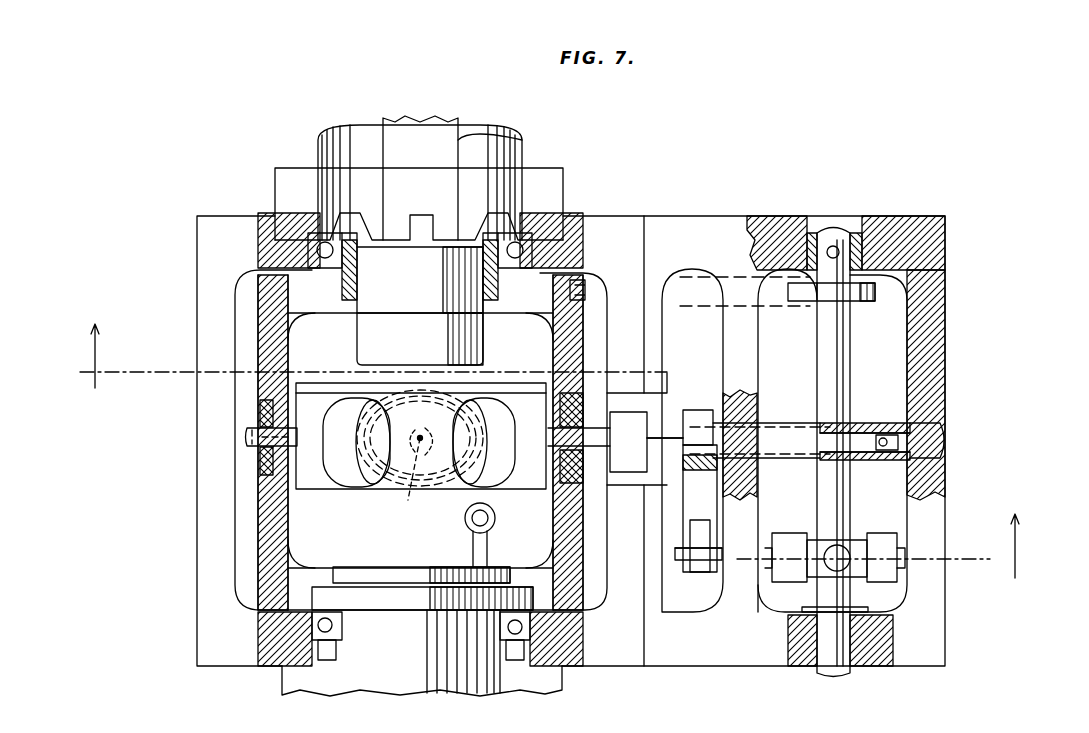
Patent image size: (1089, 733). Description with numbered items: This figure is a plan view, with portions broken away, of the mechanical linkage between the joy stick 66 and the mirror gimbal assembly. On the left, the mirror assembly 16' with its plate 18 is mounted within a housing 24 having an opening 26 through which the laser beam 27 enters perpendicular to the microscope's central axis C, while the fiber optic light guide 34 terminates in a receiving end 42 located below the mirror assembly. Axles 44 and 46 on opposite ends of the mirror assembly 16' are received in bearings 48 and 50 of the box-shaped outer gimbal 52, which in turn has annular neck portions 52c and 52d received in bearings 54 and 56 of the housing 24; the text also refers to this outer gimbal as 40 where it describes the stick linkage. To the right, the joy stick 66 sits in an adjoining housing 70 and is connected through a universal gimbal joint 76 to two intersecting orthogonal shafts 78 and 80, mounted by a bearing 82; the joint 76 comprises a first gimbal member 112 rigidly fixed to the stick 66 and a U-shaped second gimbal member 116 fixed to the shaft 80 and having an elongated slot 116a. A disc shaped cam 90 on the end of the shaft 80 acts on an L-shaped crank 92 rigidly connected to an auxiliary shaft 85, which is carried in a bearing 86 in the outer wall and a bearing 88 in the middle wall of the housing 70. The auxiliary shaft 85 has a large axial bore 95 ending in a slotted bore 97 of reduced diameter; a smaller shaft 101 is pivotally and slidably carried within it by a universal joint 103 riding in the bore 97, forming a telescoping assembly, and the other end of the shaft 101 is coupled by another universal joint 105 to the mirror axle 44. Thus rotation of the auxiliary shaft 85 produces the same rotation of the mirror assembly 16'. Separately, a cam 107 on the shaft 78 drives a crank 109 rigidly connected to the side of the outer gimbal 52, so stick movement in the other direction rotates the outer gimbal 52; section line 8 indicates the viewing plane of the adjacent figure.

The section line 8 is at (550, 449).
The mirror assembly 16' is at (343, 512).
The plate 18 is at (520, 395).
The housing 24 is at (216, 232).
The opening 26 is at (500, 128).
The laser beam 27 is at (432, 435).
The fiber optic light guide 34 is at (488, 548).
The outer gimbal 40 is at (368, 440).
The receiving end 42 is at (468, 525).
The axle 44 is at (548, 440).
The axle 46 is at (247, 437).
The bearing 48 is at (583, 392).
The bearing 50 is at (262, 410).
The outer gimbal 52 is at (260, 320).
The annular neck portion 52c is at (337, 640).
The annular neck portion 52d is at (472, 268).
The bearing 54 is at (338, 628).
The bearing 56 is at (330, 240).
The joy stick 66 is at (835, 545).
The housing 70 is at (760, 358).
The universal gimbal joint 76 is at (800, 588).
The shaft 78 is at (852, 365).
The shaft 80 is at (765, 550).
The bearing 82 is at (855, 230).
The auxiliary shaft 85 is at (788, 432).
The bearing 86 is at (946, 425).
The bearing 88 is at (718, 410).
The disc shaped cam 90 is at (700, 572).
The L-shaped crank 92 is at (700, 508).
The axial bore 95 is at (848, 427).
The bore 97 is at (858, 460).
The smaller shaft 101 is at (657, 438).
The universal joint 103 is at (883, 434).
The universal joint 105 is at (646, 442).
The cam 107 is at (865, 303).
The crank 109 is at (600, 290).
The first gimbal member 112 is at (855, 570).
The second gimbal member 116 is at (878, 560).
The elongated slot 116a is at (806, 540).
The central axis C is at (407, 474).